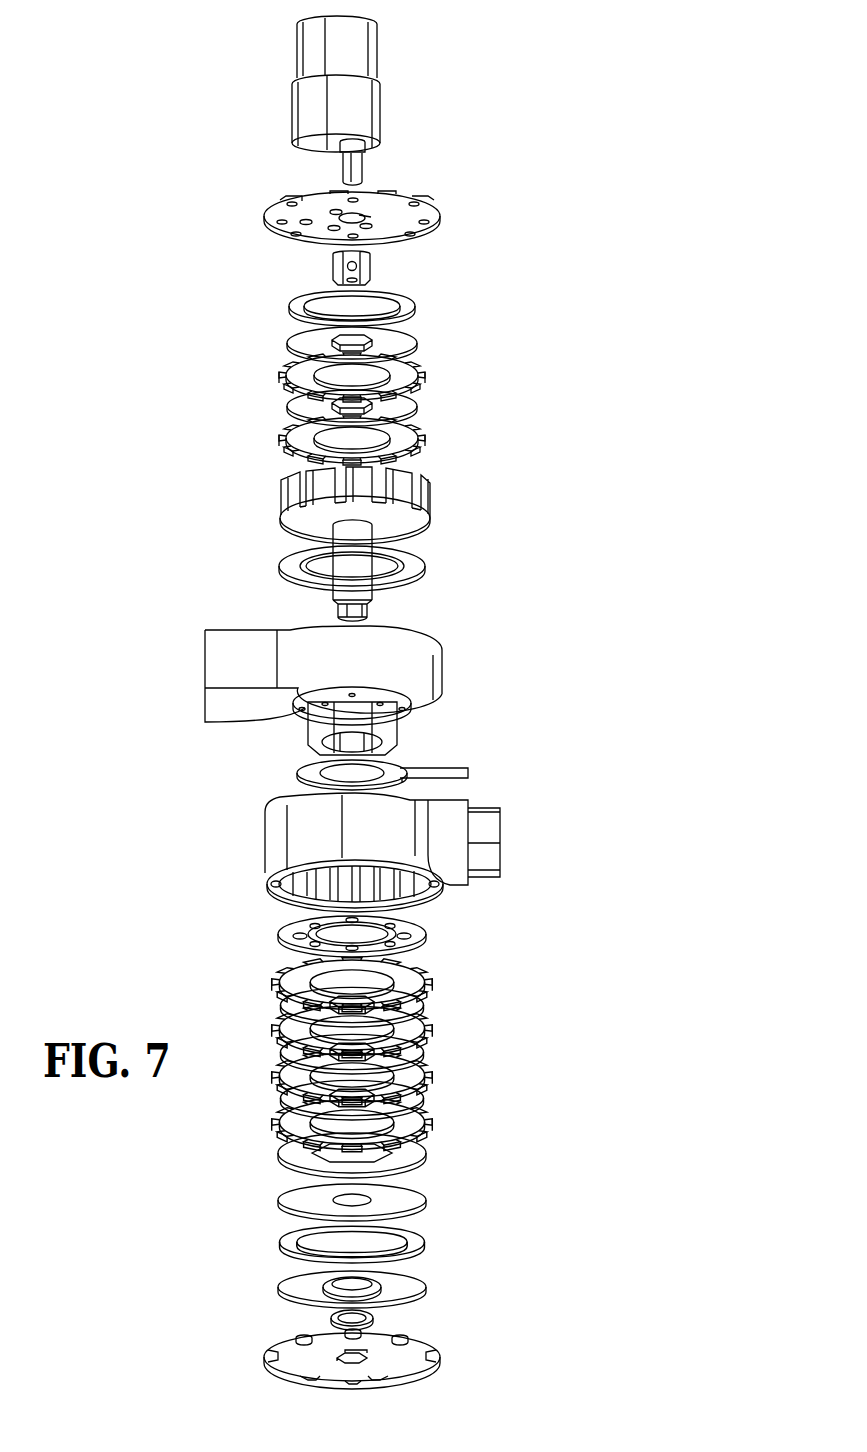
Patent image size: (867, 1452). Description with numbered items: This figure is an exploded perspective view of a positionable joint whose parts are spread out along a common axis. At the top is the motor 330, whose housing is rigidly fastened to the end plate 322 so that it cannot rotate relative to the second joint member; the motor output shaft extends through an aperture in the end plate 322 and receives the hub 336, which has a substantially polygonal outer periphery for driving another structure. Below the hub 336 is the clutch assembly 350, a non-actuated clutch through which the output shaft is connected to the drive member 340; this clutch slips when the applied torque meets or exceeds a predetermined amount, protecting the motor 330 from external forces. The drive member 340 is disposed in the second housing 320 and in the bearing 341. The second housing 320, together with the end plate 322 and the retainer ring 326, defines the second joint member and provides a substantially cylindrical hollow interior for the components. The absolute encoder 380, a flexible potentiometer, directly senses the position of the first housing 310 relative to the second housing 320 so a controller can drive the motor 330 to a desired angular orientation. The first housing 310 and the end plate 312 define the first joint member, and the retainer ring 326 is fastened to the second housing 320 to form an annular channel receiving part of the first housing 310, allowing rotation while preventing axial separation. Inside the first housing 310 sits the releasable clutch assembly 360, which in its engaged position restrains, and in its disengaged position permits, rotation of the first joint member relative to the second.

The motor 330 is at (391, 111).
The end plate 322 is at (283, 228).
The hub 336 is at (372, 261).
The clutch assembly 350 is at (462, 472).
The drive member 340 is at (280, 493).
The bearing 341 is at (425, 565).
The second housing 320 is at (446, 691).
The absolute encoder 380 is at (305, 776).
The first housing 310 is at (263, 853).
The retainer ring 326 is at (428, 943).
The releasable clutch assembly 360 is at (458, 963).
The end plate 312 is at (267, 1358).